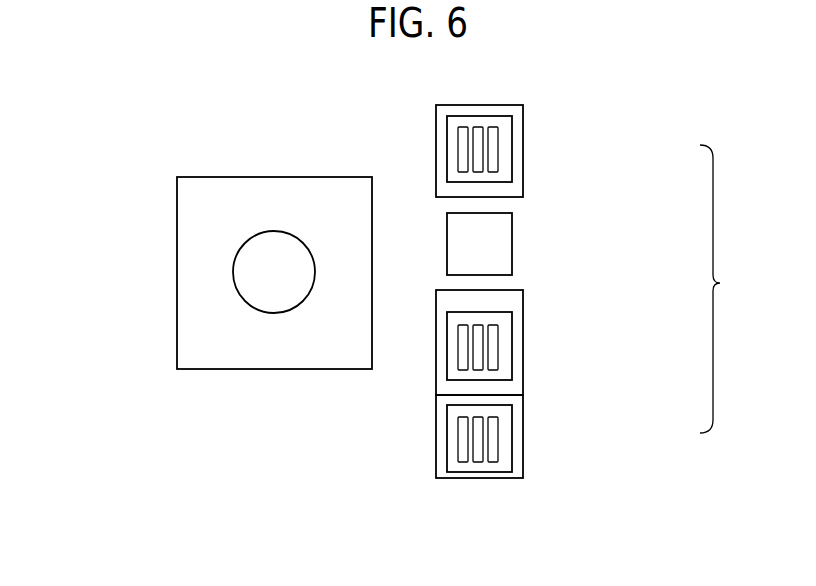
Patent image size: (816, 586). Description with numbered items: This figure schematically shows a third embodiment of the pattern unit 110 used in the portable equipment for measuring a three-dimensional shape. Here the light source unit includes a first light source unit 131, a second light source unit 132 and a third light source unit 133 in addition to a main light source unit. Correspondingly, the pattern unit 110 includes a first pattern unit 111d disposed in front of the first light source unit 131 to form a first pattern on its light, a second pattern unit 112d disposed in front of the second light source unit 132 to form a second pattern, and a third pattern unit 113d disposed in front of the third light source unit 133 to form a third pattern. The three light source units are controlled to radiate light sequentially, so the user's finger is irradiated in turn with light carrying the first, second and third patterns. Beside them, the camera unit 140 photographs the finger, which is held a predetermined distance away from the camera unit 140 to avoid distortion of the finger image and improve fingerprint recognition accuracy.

The pattern unit 110 is at (736, 289).
The first pattern unit 111d is at (523, 150).
The second pattern unit 112d is at (523, 341).
The third pattern unit 113d is at (523, 436).
The first light source unit 131 is at (447, 148).
The second light source unit 132 is at (447, 348).
The third light source unit 133 is at (447, 440).
The camera unit 140 is at (177, 270).